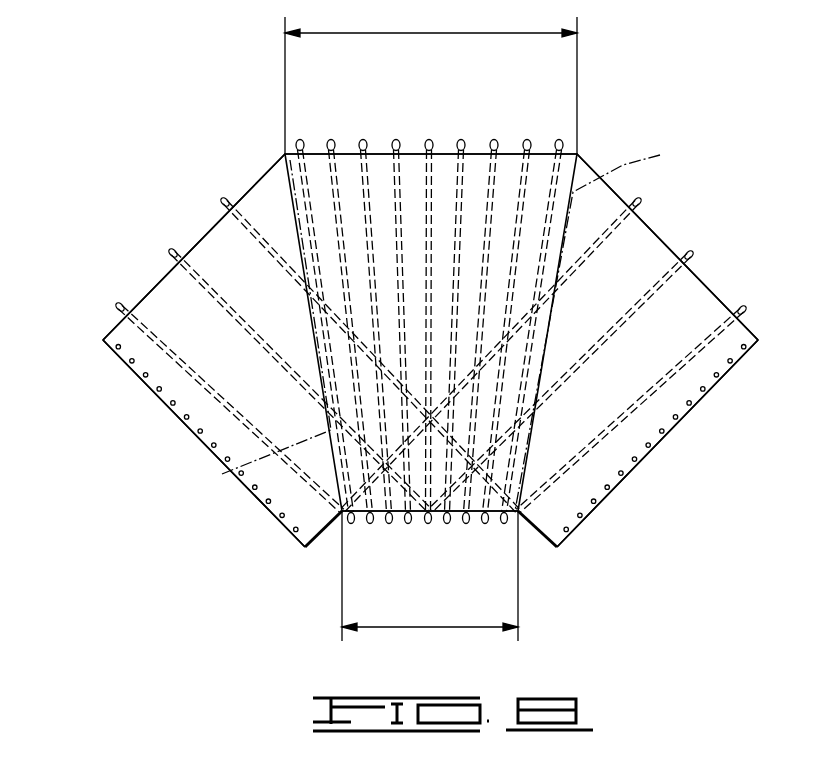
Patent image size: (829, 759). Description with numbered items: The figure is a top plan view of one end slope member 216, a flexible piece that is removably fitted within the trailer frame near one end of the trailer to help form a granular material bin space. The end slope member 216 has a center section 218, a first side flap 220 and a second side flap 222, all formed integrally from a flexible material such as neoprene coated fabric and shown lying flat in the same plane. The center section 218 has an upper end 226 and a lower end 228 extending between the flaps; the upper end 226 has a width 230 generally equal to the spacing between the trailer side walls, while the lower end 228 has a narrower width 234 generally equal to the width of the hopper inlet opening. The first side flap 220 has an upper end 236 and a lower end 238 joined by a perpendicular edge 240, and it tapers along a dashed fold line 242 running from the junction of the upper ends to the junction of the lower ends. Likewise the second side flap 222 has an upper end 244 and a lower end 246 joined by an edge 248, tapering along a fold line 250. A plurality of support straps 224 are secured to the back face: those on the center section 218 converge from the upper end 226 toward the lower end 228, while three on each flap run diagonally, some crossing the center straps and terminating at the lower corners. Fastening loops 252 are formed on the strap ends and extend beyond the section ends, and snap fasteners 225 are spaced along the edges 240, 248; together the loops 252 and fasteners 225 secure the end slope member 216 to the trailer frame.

The end slope member 216 is at (258, 160).
The center section 218 is at (508, 158).
The first side flap 220 is at (692, 275).
The second side flap 222 is at (212, 245).
The support straps 224 is at (342, 187).
The snap fasteners 225 is at (226, 458).
The upper end 226 is at (442, 152).
The lower end 228 is at (375, 522).
The width 230 is at (396, 41).
The width 234 is at (472, 631).
The upper end 236 is at (653, 228).
The lower end 238 is at (542, 543).
The edge 240 is at (661, 432).
The fold line 242 is at (604, 326).
The upper end 244 is at (158, 280).
The lower end 246 is at (320, 537).
The edge 248 is at (260, 508).
The fold line 250 is at (228, 471).
The fastening loops 252 is at (370, 146).